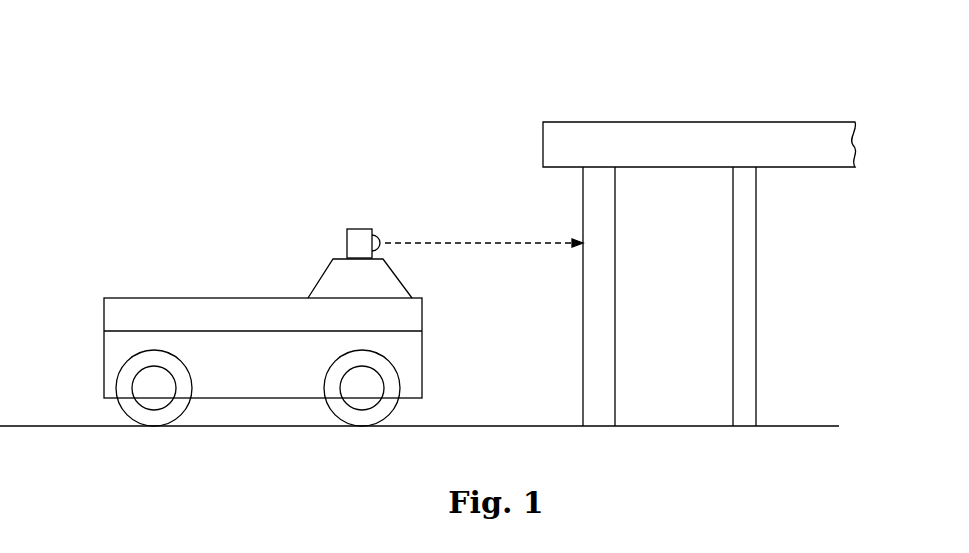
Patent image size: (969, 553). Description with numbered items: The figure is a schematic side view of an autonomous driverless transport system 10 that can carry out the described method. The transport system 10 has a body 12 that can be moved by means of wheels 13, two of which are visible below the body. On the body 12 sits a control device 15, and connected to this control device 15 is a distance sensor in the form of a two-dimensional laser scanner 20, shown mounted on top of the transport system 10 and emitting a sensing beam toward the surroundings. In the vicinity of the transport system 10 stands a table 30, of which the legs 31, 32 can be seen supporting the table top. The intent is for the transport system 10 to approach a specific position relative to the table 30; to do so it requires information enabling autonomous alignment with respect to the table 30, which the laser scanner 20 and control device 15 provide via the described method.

The autonomous driverless transport system 10 is at (304, 305).
The body 12 is at (120, 313).
The wheels 13 is at (118, 388).
The control device 15 is at (333, 283).
The 2D laser scanner 20 is at (360, 238).
The table 30 is at (699, 226).
The leg 31 is at (606, 287).
The leg 32 is at (748, 283).